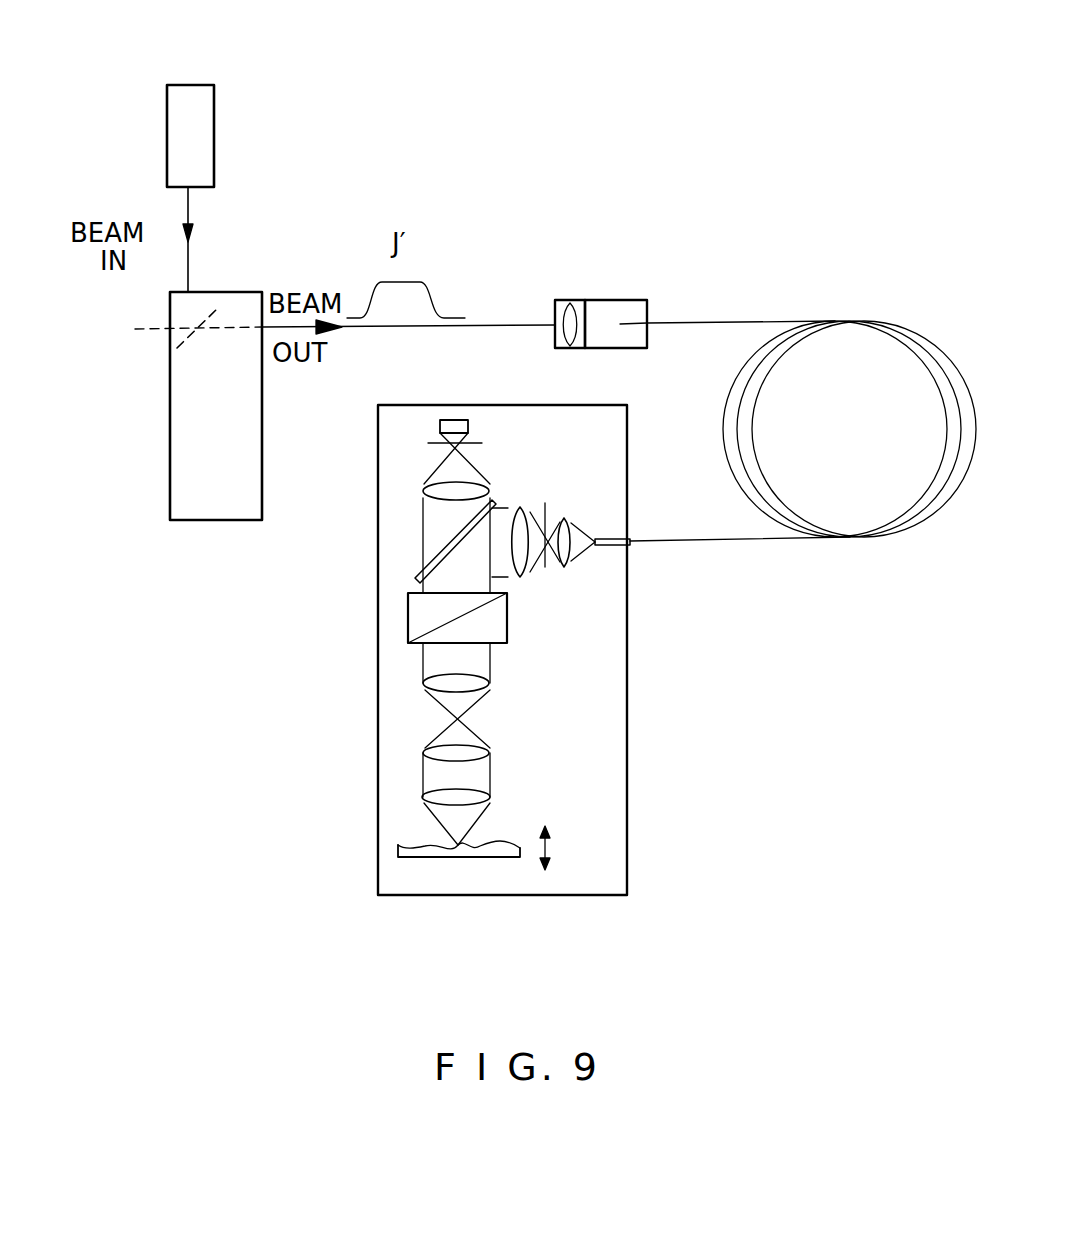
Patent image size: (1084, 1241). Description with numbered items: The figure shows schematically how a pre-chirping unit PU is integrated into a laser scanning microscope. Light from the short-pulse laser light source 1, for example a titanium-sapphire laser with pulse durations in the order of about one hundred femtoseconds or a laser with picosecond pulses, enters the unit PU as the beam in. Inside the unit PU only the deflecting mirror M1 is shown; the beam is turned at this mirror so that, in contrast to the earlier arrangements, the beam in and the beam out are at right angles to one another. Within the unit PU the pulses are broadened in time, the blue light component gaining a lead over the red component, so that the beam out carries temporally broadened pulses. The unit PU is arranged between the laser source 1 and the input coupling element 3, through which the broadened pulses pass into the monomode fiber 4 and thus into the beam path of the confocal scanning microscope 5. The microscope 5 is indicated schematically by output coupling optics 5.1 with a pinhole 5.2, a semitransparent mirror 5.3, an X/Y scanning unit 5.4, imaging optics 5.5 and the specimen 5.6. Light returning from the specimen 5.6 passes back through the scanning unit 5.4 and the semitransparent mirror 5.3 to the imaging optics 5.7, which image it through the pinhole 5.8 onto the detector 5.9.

The short-pulse laser light source 1 is at (187, 85).
The input coupling element 3 is at (630, 300).
The monomode fiber 4 is at (735, 541).
The confocal scanning microscope 5 is at (627, 706).
The output coupling optics 5.1 is at (565, 568).
The pinhole 5.2 is at (546, 504).
The semitransparent mirror 5.3 is at (432, 554).
The X/Y scanning unit 5.4 is at (507, 632).
The imaging optics 5.5 is at (493, 684).
The specimen 5.6 is at (438, 857).
The imaging optics 5.7 is at (423, 473).
The pinhole 5.8 is at (482, 443).
The detector 5.9 is at (468, 425).
The pre-chirping unit PU is at (170, 437).
The deflecting mirror M1 is at (135, 329).